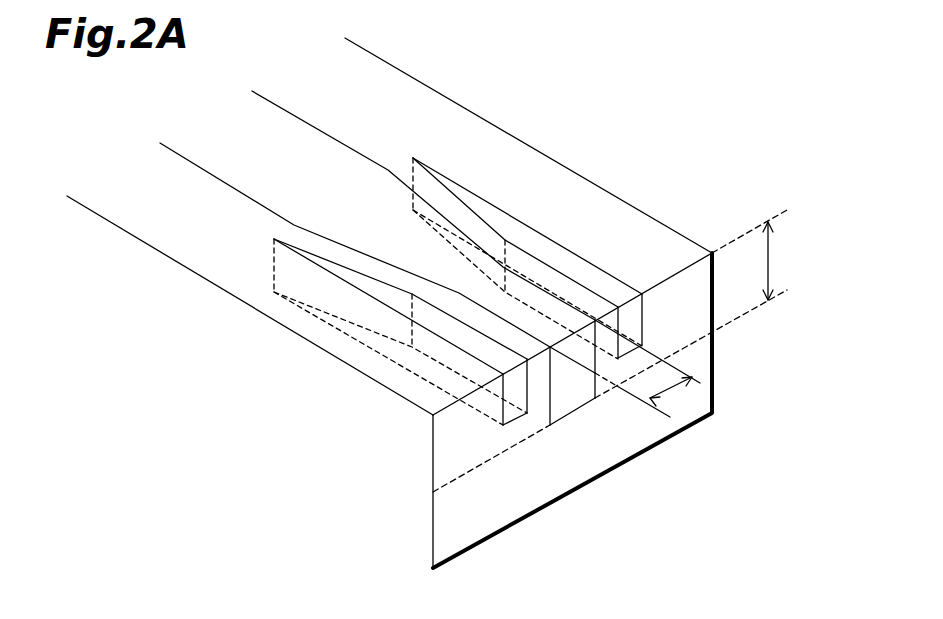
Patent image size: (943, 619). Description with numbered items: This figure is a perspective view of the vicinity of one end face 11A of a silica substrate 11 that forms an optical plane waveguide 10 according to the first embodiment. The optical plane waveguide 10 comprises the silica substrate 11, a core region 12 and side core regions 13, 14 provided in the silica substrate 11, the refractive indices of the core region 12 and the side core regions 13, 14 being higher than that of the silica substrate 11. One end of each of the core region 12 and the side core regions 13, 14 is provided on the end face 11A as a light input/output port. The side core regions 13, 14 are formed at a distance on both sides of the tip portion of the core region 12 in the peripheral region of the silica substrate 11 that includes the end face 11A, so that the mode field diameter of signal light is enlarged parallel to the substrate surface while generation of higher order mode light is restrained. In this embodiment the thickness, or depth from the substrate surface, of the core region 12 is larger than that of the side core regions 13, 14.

The optical plane waveguide 10 is at (590, 100).
The silica substrate 11 is at (648, 218).
The end face 11A is at (713, 352).
The core region 12 is at (212, 171).
The side core region 13 is at (372, 283).
The side core region 14 is at (518, 225).